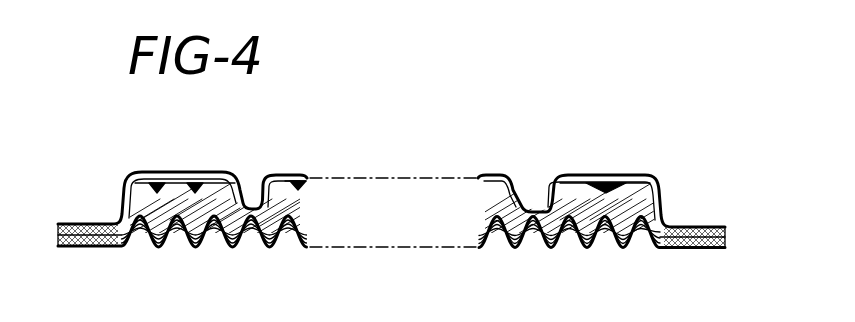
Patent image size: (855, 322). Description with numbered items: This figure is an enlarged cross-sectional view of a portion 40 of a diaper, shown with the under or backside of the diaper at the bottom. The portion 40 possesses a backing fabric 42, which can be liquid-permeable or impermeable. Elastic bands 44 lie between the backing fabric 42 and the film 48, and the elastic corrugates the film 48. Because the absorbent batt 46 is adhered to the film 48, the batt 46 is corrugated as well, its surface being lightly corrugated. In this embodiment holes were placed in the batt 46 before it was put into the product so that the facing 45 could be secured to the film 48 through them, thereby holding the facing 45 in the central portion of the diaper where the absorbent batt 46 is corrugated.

The portion of the diaper 40 is at (119, 166).
The backing fabric 42 is at (272, 248).
The elastic bands 44 is at (83, 247).
The facing 45 is at (181, 172).
The corrugated batt 46 is at (305, 184).
The film 48 is at (305, 220).